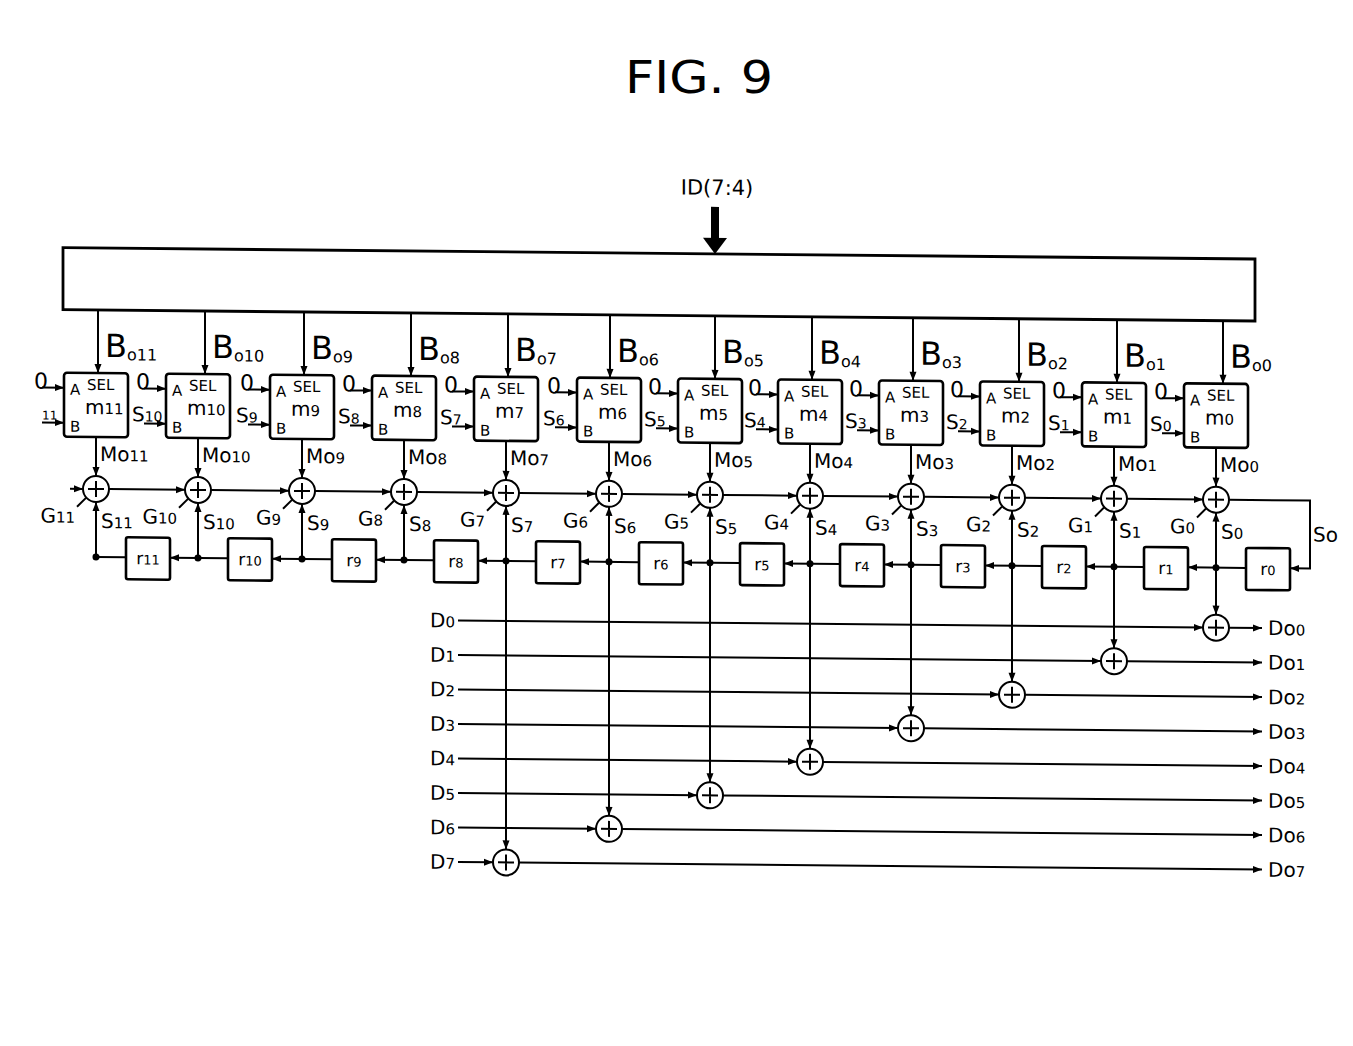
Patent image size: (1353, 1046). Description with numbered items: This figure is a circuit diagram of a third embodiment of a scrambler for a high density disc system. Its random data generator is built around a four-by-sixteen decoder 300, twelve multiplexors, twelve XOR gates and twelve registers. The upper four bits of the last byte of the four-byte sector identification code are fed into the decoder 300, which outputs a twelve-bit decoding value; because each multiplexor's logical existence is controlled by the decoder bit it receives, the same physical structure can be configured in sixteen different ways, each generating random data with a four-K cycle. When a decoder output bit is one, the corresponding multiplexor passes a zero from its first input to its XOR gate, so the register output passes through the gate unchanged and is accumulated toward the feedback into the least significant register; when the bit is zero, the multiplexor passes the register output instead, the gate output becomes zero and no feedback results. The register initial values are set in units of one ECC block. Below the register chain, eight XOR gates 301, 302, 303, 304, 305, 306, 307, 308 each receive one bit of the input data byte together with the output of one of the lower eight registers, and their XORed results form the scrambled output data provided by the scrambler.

The 4×16 decoder 300 is at (1110, 248).
The XOR gate 301 is at (1227, 610).
The XOR gate 302 is at (1125, 644).
The XOR gate 303 is at (1023, 679).
The XOR gate 304 is at (922, 714).
The XOR gate 305 is at (821, 748).
The XOR gate 306 is at (721, 783).
The XOR gate 307 is at (620, 817).
The XOR gate 308 is at (517, 852).